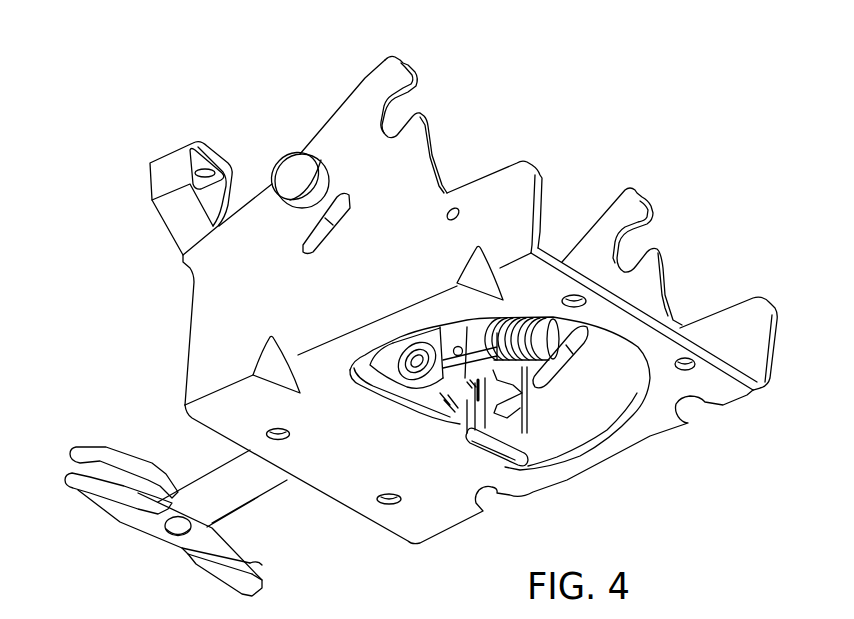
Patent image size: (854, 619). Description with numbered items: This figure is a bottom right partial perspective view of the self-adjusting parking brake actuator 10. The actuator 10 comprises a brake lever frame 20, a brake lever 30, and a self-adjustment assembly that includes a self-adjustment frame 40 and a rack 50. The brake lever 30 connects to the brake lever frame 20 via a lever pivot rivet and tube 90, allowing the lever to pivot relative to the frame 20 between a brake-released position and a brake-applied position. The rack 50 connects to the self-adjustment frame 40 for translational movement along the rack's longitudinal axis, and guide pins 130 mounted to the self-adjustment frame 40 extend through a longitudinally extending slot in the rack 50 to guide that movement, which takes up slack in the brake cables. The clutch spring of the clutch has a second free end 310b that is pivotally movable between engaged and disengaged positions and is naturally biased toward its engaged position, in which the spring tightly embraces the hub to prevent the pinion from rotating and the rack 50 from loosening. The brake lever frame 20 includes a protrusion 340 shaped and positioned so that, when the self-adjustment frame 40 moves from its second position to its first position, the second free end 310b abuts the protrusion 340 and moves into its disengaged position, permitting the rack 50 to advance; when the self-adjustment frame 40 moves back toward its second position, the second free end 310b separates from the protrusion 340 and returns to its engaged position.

The self-adjusting parking brake actuator 10 is at (639, 148).
The brake lever frame 20 is at (188, 312).
The brake lever 30 is at (403, 386).
The self-adjustment frame 40 is at (510, 405).
The rack 50 is at (255, 493).
The lever pivot rivet and tube 90 is at (292, 165).
The guide pins 130 is at (457, 346).
The second free end 310b is at (477, 410).
The protrusion 340 is at (478, 414).